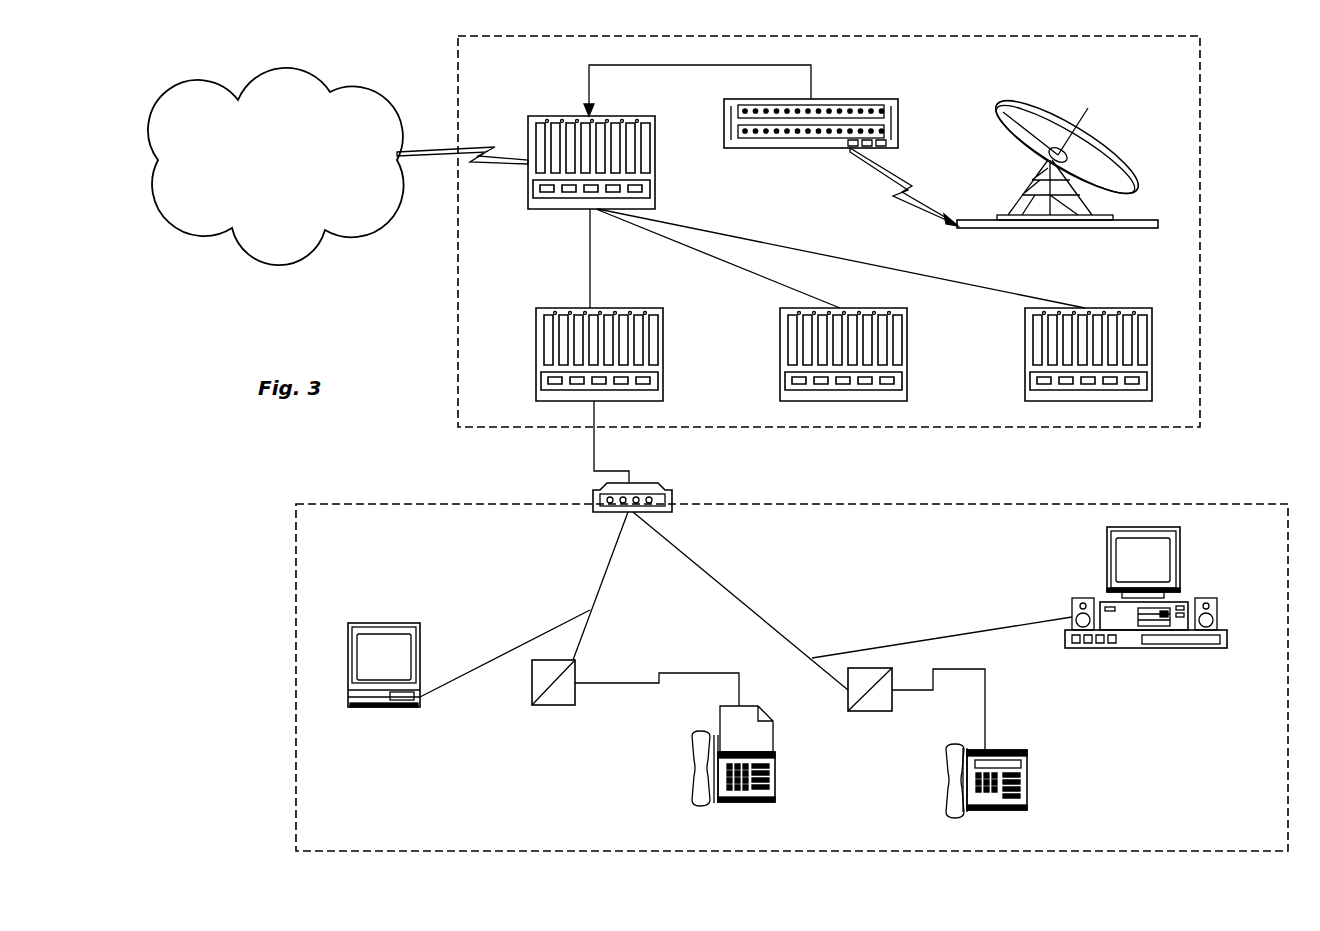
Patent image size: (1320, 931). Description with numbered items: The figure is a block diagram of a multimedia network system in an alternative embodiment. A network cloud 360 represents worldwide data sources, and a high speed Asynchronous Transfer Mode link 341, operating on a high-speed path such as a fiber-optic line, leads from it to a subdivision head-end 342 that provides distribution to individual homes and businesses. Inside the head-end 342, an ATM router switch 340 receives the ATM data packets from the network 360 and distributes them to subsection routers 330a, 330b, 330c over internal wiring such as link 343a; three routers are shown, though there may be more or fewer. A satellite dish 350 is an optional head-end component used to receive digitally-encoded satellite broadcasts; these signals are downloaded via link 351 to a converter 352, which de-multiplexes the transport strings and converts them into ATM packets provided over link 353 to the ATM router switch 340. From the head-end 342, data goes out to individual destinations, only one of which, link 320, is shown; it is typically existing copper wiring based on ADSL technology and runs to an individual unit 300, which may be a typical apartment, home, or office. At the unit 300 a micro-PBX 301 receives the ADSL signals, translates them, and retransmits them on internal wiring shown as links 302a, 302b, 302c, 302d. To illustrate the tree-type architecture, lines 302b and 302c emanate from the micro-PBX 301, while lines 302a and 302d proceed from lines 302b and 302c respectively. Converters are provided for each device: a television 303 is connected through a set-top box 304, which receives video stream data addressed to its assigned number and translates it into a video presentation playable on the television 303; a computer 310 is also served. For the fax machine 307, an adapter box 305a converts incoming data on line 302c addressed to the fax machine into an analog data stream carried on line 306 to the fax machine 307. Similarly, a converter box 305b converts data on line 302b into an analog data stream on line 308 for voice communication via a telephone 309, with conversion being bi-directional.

The unit 300 is at (1153, 492).
The micro-PBX 301 is at (650, 482).
The link 302a is at (990, 628).
The link 302b is at (736, 592).
The link 302c is at (575, 636).
The link 302d is at (537, 636).
The television 303 is at (386, 665).
The set-top box 304 is at (385, 708).
The adapter box 305a is at (552, 706).
The converter box 305b is at (880, 712).
The fax line 306 is at (672, 673).
The fax machine 307 is at (690, 772).
The line 308 is at (986, 708).
The telephone 309 is at (1028, 775).
The computer 310 is at (1180, 548).
The link 320 is at (594, 447).
The subsection router 330a is at (536, 355).
The subsection router 330b is at (780, 367).
The subsection router 330c is at (1025, 373).
The ATM router switch 340 is at (557, 114).
The link 341 is at (440, 150).
The subdivision head-end 342 is at (464, 446).
The link 343a is at (588, 282).
The satellite dish 350 is at (1118, 230).
The link 351 is at (888, 183).
The converter 352 is at (898, 118).
The link 353 is at (706, 68).
The network cloud 360 is at (292, 170).